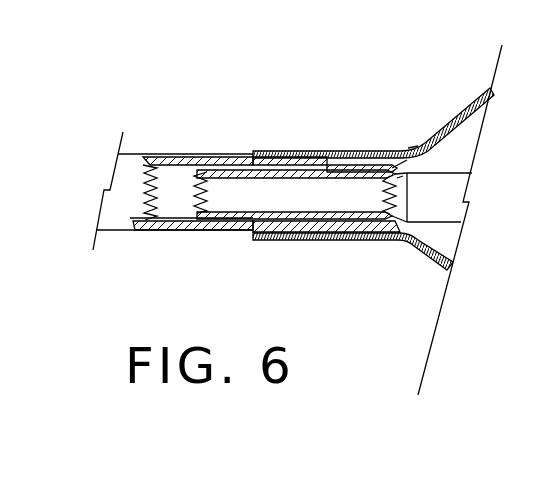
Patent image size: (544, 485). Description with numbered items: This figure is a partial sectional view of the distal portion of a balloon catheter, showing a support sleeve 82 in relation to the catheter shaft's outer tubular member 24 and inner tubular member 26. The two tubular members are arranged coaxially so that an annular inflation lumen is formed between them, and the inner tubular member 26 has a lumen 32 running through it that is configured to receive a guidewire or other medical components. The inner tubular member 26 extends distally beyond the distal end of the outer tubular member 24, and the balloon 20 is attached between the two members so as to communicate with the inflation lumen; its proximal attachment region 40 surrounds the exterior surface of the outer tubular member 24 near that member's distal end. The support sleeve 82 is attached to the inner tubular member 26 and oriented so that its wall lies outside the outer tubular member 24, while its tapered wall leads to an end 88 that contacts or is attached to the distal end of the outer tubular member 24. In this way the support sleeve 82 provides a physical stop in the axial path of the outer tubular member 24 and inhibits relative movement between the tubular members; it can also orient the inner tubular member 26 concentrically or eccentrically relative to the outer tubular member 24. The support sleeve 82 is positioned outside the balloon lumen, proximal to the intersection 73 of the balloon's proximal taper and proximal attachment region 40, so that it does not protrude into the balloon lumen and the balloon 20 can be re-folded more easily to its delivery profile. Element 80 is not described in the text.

The balloon 20 is at (465, 110).
The outer tubular member 24 is at (127, 222).
The inner tubular member 26 is at (178, 205).
The lumen 32 is at (288, 208).
The proximal attachment region 40 is at (297, 150).
The intersection 73 is at (411, 132).
The sleeve 80 is at (342, 150).
The support sleeve 82 is at (400, 177).
The end 88 is at (262, 235).